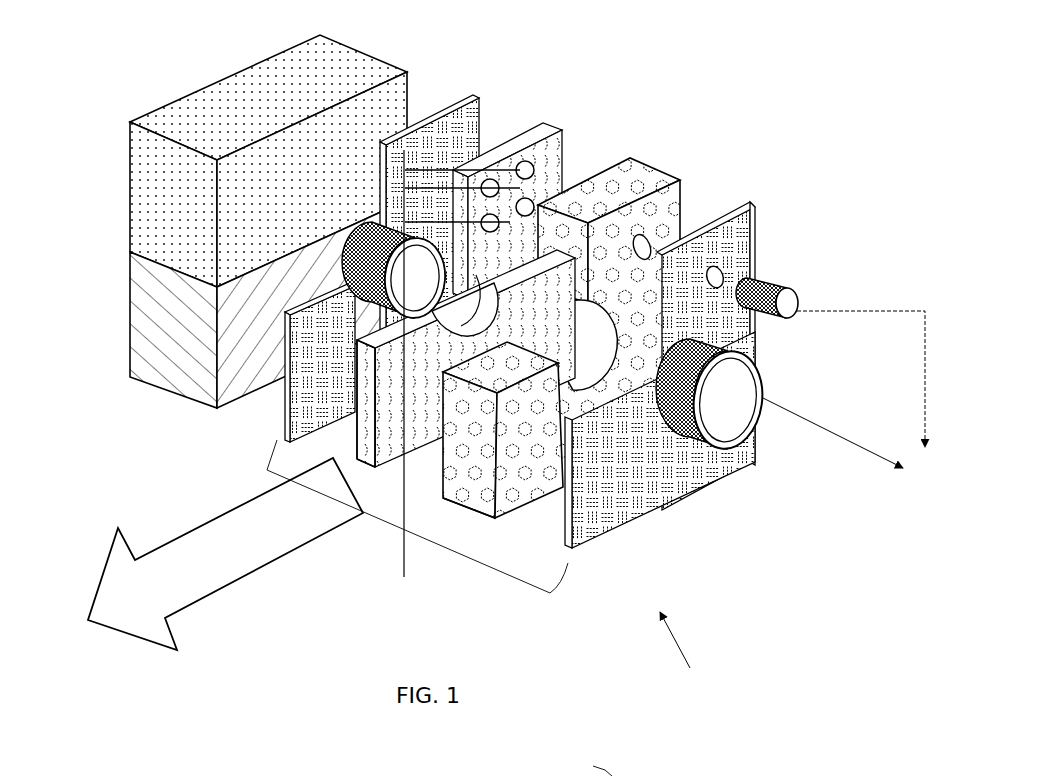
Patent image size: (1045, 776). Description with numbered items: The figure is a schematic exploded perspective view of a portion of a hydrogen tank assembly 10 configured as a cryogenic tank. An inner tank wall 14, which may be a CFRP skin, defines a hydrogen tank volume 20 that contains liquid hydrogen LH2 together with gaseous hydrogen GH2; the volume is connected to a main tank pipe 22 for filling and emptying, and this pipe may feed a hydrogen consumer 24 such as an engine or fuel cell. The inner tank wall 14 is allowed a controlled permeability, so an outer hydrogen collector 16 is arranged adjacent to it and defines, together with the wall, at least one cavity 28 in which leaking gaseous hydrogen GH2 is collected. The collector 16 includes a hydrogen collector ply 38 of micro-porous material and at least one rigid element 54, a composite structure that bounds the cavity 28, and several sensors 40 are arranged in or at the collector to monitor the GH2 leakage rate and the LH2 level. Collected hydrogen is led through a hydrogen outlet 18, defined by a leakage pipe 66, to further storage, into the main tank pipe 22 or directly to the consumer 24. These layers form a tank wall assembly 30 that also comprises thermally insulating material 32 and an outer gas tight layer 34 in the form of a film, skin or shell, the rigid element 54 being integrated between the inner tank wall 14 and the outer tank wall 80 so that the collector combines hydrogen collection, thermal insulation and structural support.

The hydrogen tank assembly 10 is at (685, 655).
The inner tank wall 14 is at (445, 112).
The outer hydrogen collector 16 is at (570, 87).
The hydrogen outlet 18 is at (778, 283).
The hydrogen tank volume 20 is at (212, 221).
The main tank pipe 22 is at (281, 343).
The hydrogen consumer 24 is at (848, 404).
The cavity 28 is at (562, 152).
The tank wall assembly 30 is at (378, 527).
The thermally insulating material 32 is at (475, 493).
The gas tight layer 34 is at (623, 497).
The hydrogen collector ply 38 is at (538, 120).
The sensors 40 is at (517, 198).
The rigid element 54 is at (462, 478).
The leakage pipe 66 is at (763, 280).
The outer tank wall 80 is at (703, 485).
The gaseous hydrogen GH2 is at (147, 192).
The liquid hydrogen LH2 is at (147, 337).